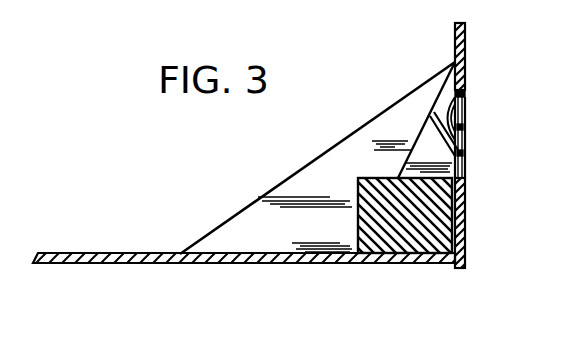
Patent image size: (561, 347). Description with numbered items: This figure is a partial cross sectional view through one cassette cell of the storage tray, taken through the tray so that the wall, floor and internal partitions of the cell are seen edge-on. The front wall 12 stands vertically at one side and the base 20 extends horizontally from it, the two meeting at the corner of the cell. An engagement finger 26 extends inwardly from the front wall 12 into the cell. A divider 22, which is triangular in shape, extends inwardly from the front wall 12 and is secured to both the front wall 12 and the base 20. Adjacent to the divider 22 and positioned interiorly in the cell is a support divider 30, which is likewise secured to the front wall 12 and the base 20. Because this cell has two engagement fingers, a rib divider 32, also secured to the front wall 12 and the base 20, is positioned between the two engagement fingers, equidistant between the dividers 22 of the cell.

The front wall 12 is at (465, 213).
The base 20 is at (374, 264).
The divider 22 is at (333, 146).
The engagement finger 26 is at (441, 98).
The support divider 30 is at (457, 158).
The rib divider 32 is at (430, 240).